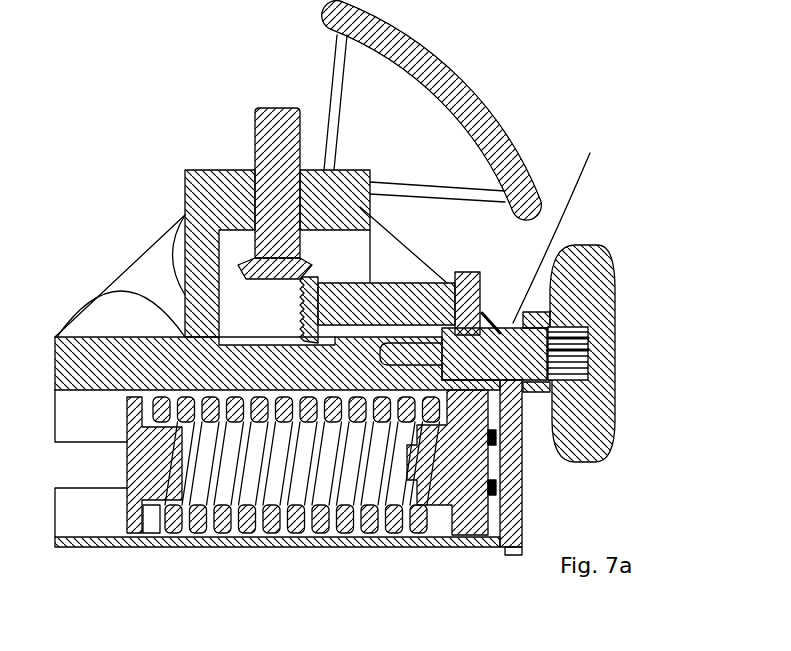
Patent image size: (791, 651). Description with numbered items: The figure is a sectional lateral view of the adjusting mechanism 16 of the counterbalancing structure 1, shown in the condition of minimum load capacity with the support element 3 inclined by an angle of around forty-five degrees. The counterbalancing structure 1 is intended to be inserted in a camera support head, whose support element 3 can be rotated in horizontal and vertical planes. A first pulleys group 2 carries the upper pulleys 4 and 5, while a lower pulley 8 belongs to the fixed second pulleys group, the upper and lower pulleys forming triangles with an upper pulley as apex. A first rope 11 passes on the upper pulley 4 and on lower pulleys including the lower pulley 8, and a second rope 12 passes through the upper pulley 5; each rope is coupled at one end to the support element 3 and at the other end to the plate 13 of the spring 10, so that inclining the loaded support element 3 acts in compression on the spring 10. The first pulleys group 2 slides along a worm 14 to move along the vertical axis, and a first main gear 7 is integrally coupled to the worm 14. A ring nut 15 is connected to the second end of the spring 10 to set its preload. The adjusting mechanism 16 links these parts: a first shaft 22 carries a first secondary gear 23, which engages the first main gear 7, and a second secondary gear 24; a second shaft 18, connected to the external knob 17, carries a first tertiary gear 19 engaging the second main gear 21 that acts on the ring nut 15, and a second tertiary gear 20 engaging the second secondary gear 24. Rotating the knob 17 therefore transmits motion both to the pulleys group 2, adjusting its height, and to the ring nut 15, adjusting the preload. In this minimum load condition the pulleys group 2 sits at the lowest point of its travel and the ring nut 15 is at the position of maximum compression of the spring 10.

The counterbalancing structure 1 is at (223, 97).
The first pulleys group 2 is at (160, 170).
The support element 3 is at (470, 72).
The upper pulley 4 is at (170, 270).
The upper pulley 5 is at (378, 280).
The first main gear 7 is at (263, 280).
The lower pulley 8 is at (117, 290).
The spring 10 is at (167, 530).
The first rope 11 is at (120, 290).
The second rope 12 is at (335, 145).
The plate 13 is at (125, 522).
The worm 14 is at (257, 145).
The ring nut 15 is at (447, 522).
The adjusting mechanism 16 is at (533, 432).
The knob 17 is at (592, 255).
The second shaft 18 is at (498, 330).
The first tertiary gear 19 is at (561, 224).
The second tertiary gear 20 is at (453, 330).
The second main gear 21 is at (505, 552).
The first shaft 22 is at (387, 287).
The first secondary gear 23 is at (300, 302).
The second secondary gear 24 is at (470, 272).